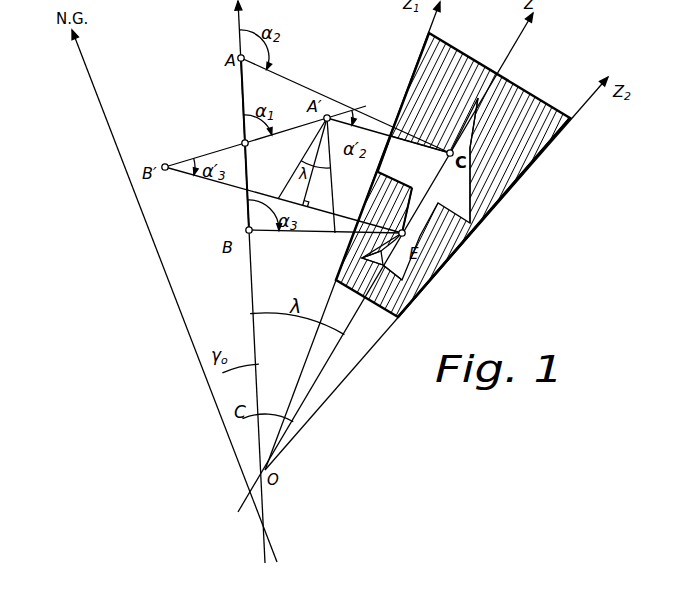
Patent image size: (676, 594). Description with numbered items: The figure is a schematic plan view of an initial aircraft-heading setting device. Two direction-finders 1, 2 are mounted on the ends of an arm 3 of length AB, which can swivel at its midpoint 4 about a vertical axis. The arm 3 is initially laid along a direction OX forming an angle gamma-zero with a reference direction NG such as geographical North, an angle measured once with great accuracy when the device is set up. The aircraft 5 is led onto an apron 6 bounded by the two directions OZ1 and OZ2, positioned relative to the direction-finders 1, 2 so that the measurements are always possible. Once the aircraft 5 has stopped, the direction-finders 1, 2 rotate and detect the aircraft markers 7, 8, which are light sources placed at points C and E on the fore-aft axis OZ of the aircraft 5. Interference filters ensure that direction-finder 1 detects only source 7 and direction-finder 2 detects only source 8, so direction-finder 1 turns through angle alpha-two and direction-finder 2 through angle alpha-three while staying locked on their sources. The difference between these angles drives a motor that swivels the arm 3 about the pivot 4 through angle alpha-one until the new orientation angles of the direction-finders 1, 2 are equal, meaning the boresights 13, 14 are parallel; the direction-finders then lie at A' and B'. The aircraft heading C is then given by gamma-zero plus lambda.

The direction-finder 1 is at (240, 40).
The direction-finder 2 is at (246, 225).
The arm 3 is at (240, 88).
The midpoint 4 is at (243, 142).
The aircraft 5 is at (453, 190).
The apron 6 is at (512, 100).
The aircraft marker (light source) 7 is at (452, 98).
The aircraft marker (light source) 8 is at (440, 238).
The boresight 13 is at (380, 118).
The boresight 14 is at (334, 232).